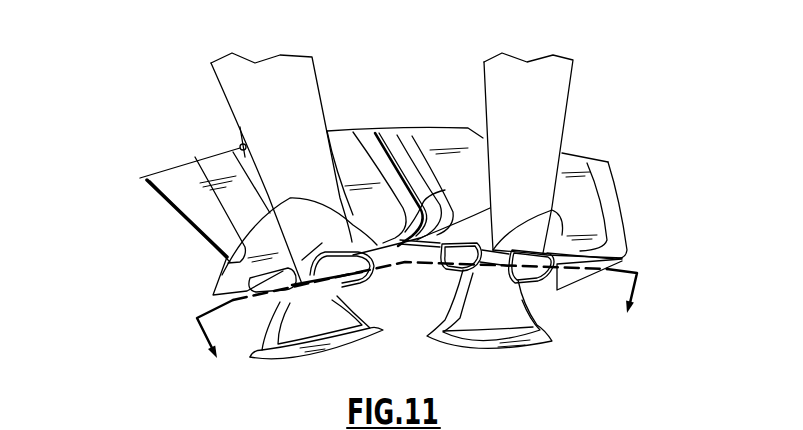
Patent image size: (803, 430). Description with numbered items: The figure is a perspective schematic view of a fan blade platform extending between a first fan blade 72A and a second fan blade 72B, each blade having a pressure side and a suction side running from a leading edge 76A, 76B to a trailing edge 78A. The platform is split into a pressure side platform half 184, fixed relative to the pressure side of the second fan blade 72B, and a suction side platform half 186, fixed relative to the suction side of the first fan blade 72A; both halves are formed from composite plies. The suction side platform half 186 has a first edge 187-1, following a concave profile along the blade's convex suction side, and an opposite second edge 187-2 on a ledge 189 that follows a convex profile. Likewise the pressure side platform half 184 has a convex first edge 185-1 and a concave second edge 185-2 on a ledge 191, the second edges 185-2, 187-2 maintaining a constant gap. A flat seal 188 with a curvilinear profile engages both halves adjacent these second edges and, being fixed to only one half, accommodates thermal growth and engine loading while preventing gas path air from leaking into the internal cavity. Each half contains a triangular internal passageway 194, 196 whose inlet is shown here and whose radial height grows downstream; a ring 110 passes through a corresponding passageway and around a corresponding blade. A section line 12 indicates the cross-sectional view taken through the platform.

The section line 12- 12 is at (422, 319).
The first fan blade 72A is at (277, 70).
The second fan blade 72B is at (543, 67).
The leading edge 76A is at (212, 72).
The leading edge 76B is at (483, 140).
The trailing edge 78A is at (238, 132).
The ring 110 is at (323, 305).
The pressure side platform half 184 is at (192, 157).
The first edge 185-1 is at (238, 143).
The second edge 185-2 is at (170, 205).
The suction side platform half 186 is at (337, 143).
The first edge 187-1 is at (230, 258).
The second edge 187-2 is at (373, 132).
The seal 188 is at (488, 212).
The ledge 189 is at (350, 220).
The ledge 191 is at (148, 174).
The internal passageway 194 is at (268, 304).
The internal passageway 196 is at (364, 283).